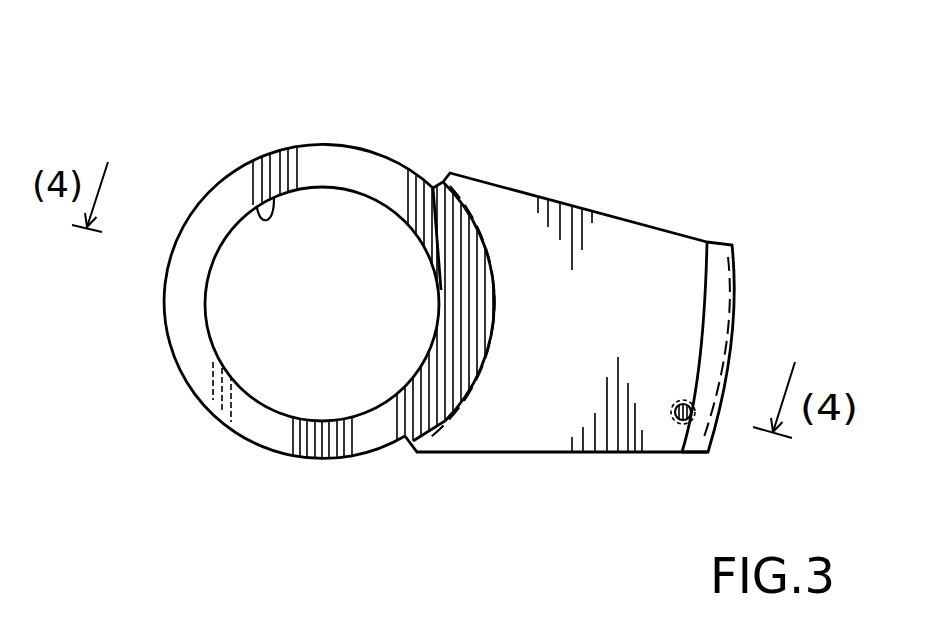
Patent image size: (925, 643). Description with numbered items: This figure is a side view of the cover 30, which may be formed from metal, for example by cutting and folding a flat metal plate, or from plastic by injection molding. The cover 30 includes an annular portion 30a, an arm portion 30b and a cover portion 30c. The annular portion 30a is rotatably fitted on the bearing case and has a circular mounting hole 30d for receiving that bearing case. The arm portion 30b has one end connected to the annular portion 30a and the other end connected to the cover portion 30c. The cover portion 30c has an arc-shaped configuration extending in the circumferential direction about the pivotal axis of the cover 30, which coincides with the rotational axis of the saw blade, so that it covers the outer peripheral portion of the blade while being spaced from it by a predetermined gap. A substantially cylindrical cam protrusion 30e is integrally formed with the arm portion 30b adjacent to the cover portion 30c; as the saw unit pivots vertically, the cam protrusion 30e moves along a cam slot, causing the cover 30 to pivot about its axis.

The cover 30 is at (548, 150).
The annular portion 30a is at (377, 173).
The arm portion 30b is at (619, 253).
The cover portion 30c is at (723, 270).
The circular mounting hole 30d is at (257, 208).
The cam protrusion 30e is at (677, 419).